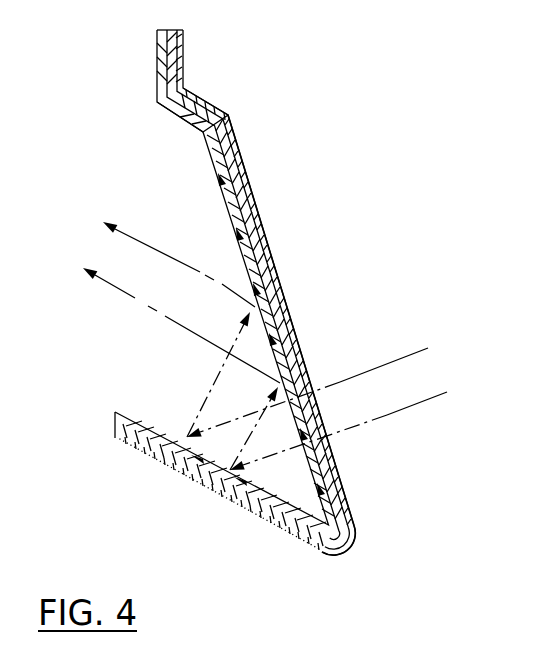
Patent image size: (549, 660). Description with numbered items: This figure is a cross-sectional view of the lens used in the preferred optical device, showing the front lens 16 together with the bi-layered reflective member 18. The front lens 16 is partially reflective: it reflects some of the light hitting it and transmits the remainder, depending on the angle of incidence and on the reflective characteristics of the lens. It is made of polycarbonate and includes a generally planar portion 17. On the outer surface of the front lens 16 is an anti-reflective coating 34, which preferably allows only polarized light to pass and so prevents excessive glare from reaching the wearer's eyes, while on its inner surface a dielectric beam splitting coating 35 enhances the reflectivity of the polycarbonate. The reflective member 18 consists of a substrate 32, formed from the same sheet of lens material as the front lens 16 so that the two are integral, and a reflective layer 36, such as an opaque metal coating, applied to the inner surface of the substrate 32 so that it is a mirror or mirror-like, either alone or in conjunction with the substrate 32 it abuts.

The front lens 16 is at (274, 264).
The generally planar portion 17 is at (255, 200).
The reflective member 18 is at (218, 490).
The substrate 32 is at (286, 310).
The anti-reflective coating 34 is at (233, 137).
The dielectric beam splitting coating 35 is at (216, 172).
The reflective layer 36 is at (115, 440).